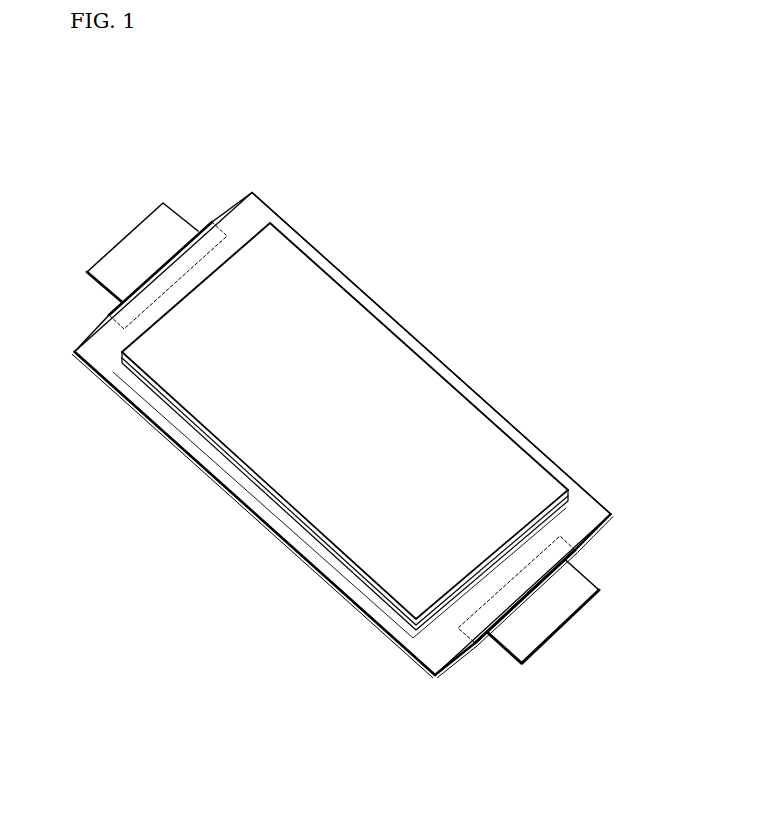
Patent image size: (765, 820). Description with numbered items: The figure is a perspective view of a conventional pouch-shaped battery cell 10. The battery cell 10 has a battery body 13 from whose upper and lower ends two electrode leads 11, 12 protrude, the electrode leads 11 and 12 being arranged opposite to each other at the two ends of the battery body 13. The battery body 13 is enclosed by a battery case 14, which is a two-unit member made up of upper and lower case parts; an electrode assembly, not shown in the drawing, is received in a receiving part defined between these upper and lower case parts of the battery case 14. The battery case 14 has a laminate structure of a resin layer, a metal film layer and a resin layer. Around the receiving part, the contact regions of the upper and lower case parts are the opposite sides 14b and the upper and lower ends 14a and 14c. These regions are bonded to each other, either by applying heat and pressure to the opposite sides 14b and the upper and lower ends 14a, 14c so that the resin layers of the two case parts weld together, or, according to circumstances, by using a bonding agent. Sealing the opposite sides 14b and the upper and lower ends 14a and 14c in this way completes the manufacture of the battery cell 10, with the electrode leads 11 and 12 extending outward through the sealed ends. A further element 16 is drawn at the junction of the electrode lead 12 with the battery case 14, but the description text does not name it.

The pouch-shaped battery cell 10 is at (98, 128).
The electrode lead 11 is at (138, 242).
The electrode lead 12 is at (567, 627).
The battery body 13 is at (412, 367).
The battery case 14 is at (598, 502).
The upper end 14a is at (252, 210).
The opposite sides 14b is at (340, 580).
The lower end 14c is at (445, 645).
The insulating film 16 is at (573, 551).